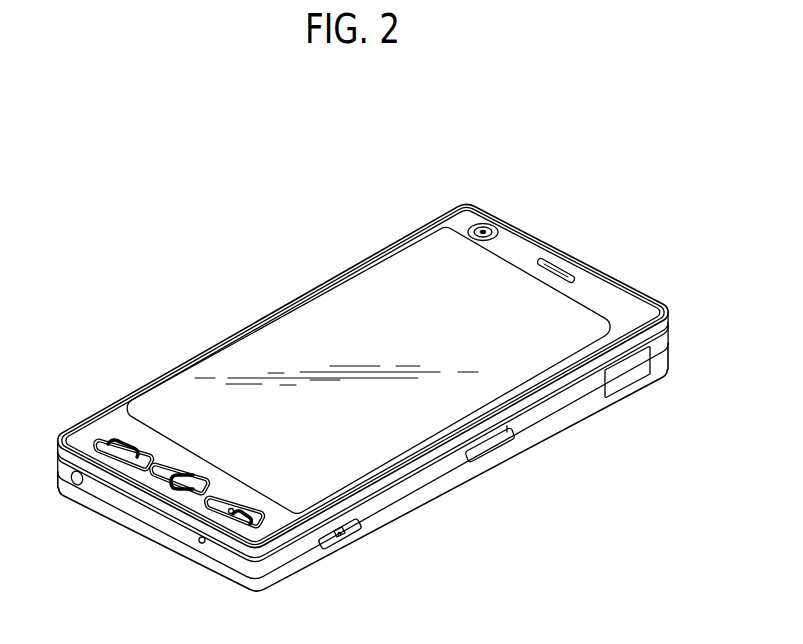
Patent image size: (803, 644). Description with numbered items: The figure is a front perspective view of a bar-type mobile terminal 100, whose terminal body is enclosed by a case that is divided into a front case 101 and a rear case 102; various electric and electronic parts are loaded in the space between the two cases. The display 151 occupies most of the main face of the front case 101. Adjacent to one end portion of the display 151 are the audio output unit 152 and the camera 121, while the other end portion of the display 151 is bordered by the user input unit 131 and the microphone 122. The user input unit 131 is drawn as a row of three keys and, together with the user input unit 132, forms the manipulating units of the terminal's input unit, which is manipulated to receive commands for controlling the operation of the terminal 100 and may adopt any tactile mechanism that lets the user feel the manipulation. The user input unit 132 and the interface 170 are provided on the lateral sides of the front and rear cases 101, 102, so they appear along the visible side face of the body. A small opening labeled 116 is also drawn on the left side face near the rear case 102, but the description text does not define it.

The mobile terminal 100 is at (338, 238).
The front case 101 is at (664, 340).
The rear case 102 is at (665, 358).
The interface / connection port 116 is at (77, 485).
The camera 121 is at (490, 231).
The microphone 122 is at (203, 545).
The user input unit 131 is at (110, 436).
The user input unit 132 is at (490, 455).
The display 151 is at (300, 297).
The audio output unit 152 is at (553, 268).
The interface 170 is at (626, 372).